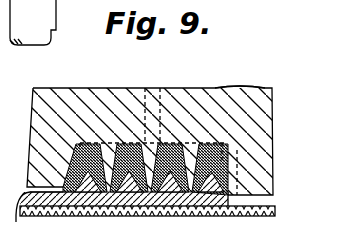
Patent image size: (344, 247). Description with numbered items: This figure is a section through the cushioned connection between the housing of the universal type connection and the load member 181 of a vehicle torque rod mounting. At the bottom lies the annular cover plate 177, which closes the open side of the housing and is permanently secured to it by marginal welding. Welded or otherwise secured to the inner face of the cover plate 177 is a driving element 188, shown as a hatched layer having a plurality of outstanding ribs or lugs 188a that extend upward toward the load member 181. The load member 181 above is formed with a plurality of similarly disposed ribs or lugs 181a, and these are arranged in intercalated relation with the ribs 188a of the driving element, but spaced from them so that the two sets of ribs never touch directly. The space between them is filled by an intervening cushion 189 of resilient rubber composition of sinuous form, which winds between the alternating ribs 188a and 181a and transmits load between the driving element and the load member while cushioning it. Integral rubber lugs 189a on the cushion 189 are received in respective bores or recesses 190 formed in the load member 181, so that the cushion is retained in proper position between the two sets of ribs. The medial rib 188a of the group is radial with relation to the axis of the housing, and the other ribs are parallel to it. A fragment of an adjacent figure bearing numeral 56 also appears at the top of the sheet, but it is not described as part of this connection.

The member of adjacent figure 56 is at (38, 27).
The annular cover plate 177 is at (155, 226).
The load member 181 is at (255, 110).
The ribs or lugs of load member 181a is at (222, 88).
The driving element 188 is at (250, 208).
The ribs or lugs of driving element 188a is at (117, 208).
The cushion 189 is at (178, 89).
The rubber lugs 189a is at (34, 90).
The bores or recesses 190 is at (237, 89).